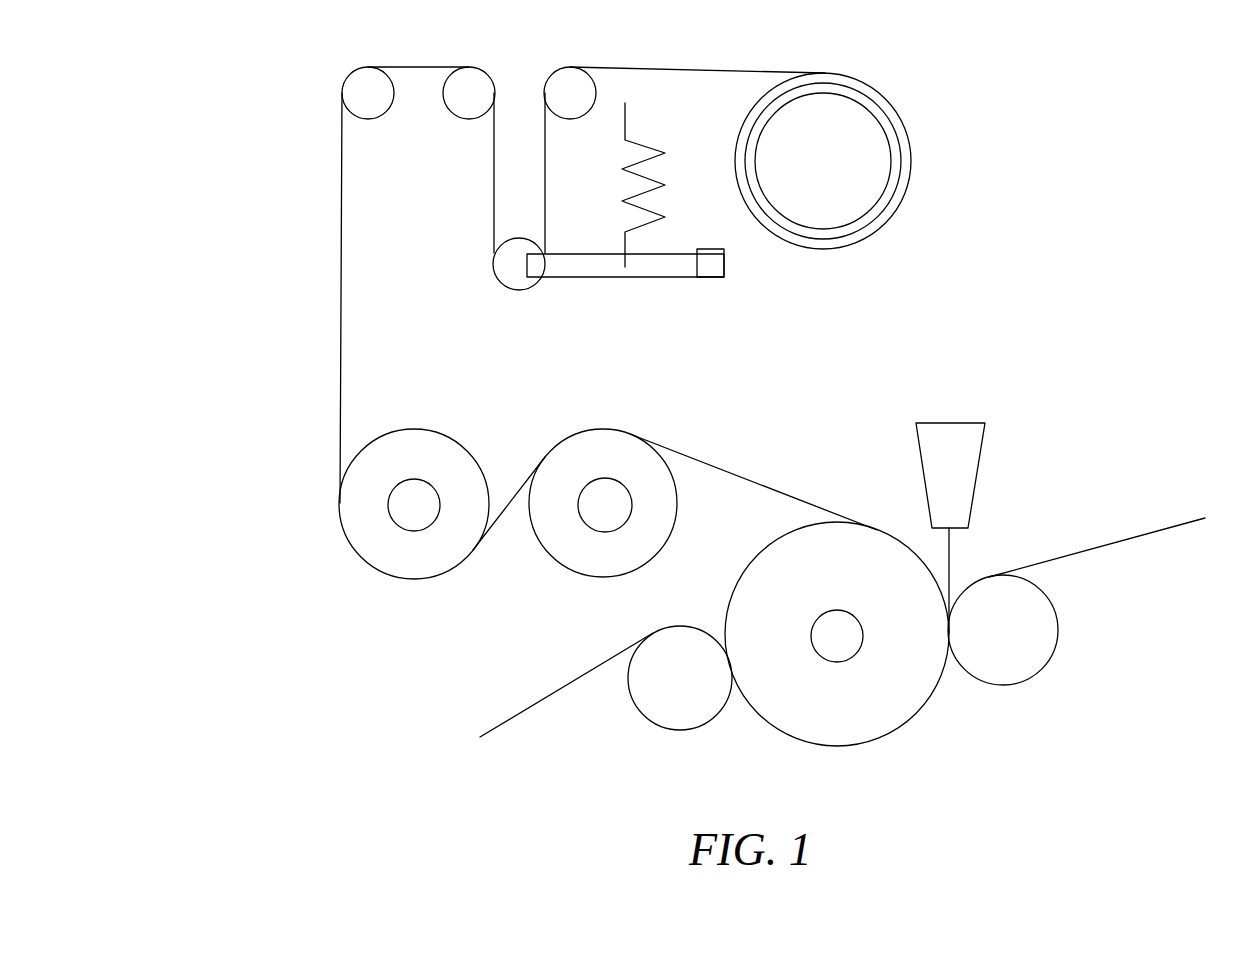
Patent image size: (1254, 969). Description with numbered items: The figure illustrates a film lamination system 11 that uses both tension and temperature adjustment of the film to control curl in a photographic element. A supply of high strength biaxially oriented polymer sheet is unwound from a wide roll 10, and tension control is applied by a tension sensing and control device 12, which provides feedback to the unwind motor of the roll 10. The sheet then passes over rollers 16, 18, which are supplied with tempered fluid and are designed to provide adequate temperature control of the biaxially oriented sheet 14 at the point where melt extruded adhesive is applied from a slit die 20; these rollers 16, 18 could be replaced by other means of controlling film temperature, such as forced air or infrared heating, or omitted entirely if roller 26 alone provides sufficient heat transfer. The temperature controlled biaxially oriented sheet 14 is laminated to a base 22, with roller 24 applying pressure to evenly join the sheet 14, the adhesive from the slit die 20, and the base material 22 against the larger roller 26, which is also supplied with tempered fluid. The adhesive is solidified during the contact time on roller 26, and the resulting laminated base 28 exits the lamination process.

The wide roll 10 is at (912, 172).
The apparatus 11 is at (948, 92).
The tension sensing and control device 12 is at (497, 268).
The biaxially oriented sheet 14 is at (343, 162).
The roller 16 is at (428, 487).
The roller 18 is at (597, 479).
The slit die 20 is at (958, 465).
The base 22 is at (1082, 552).
The roller 24 is at (1028, 613).
The roller 26 is at (896, 718).
The laminated base 28 is at (568, 685).